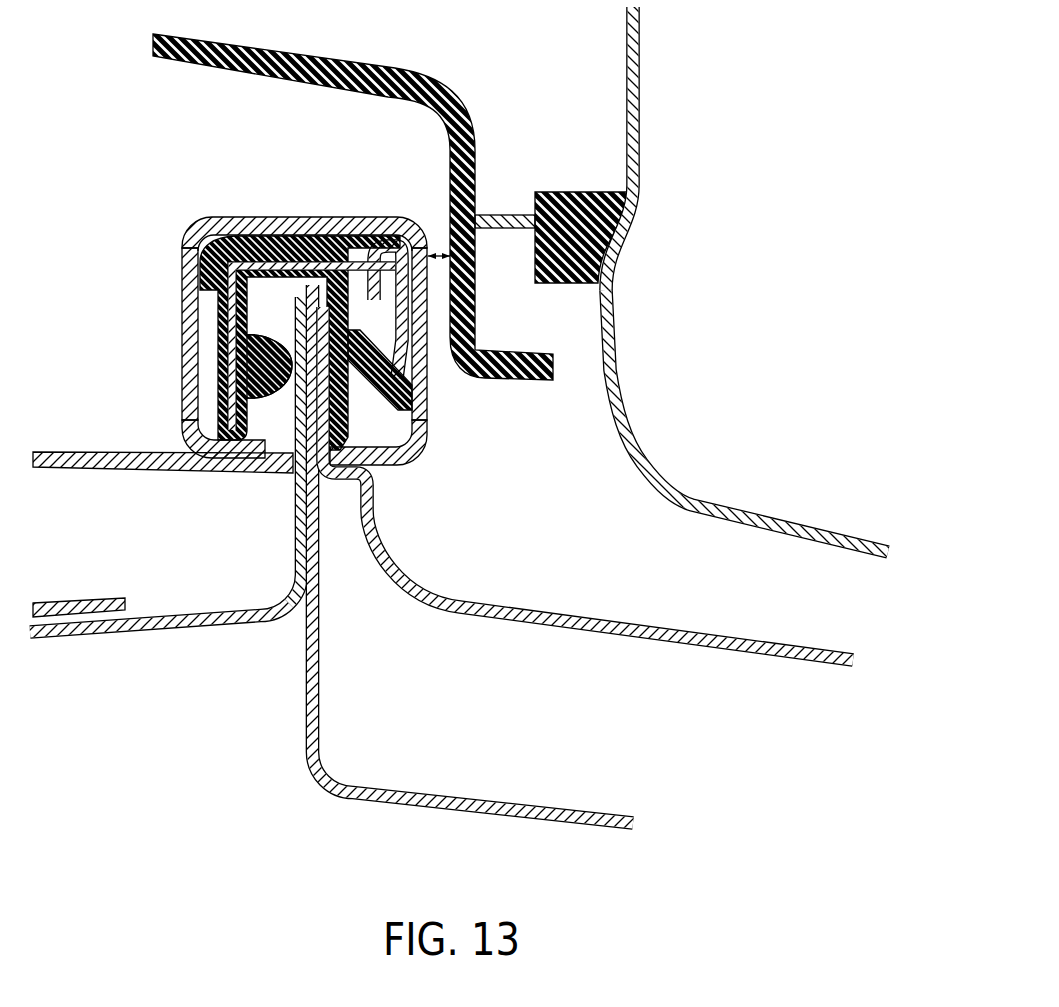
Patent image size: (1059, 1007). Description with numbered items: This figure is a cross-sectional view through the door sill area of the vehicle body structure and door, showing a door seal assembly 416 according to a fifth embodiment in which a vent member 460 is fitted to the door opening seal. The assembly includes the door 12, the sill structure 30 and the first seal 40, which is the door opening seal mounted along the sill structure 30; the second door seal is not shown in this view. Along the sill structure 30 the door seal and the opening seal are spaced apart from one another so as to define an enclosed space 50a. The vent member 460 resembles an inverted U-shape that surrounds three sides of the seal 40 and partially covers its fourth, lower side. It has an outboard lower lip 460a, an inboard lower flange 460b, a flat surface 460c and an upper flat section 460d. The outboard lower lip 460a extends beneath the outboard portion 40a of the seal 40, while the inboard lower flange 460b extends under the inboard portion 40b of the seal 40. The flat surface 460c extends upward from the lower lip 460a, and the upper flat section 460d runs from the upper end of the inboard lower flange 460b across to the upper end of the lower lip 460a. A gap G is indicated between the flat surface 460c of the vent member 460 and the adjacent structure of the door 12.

The door seal assembly 416 is at (795, 103).
The door 12 is at (640, 85).
The vent member 460 is at (311, 328).
The upper flat section 460d is at (310, 232).
The flat surface 460c is at (430, 313).
The inboard lower flange 460b is at (188, 396).
The outboard lower lip 460a is at (388, 458).
The first seal 40 is at (317, 343).
The outboard portion 40a is at (405, 390).
The inboard portion 40b is at (217, 348).
The gap G is at (438, 252).
The enclosed space 50a is at (597, 517).
The sill structure 30 is at (660, 623).